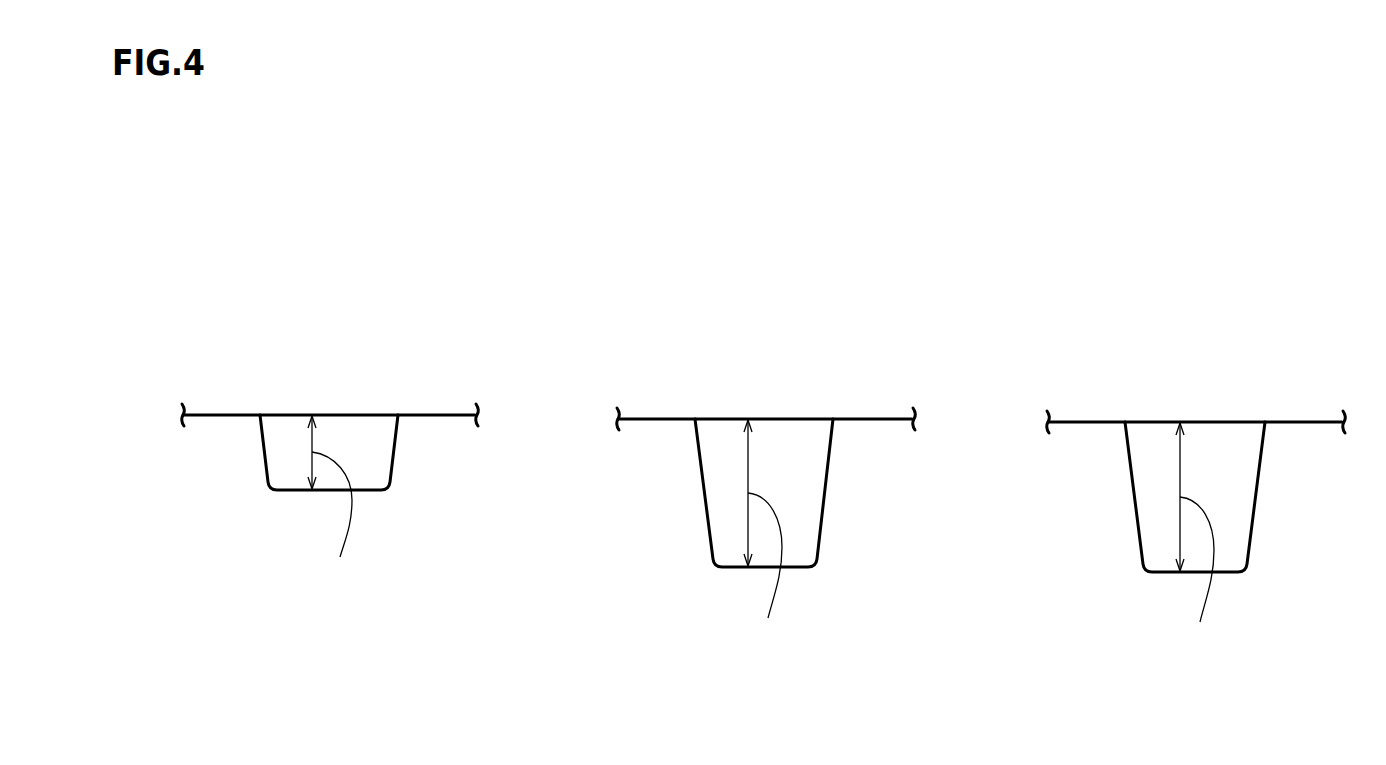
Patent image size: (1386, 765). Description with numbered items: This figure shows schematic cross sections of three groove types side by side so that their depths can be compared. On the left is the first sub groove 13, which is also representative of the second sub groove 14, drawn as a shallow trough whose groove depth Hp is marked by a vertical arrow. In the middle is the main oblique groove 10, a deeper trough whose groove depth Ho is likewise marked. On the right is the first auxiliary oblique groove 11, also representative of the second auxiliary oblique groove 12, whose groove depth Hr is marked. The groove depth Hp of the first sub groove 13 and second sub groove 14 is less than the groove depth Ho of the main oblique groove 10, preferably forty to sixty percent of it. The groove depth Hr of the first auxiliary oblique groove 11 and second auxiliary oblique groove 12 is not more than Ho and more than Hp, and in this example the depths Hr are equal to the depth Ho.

The main oblique groove 10 is at (792, 407).
The first auxiliary oblique groove 11 is at (1196, 474).
The second auxiliary oblique groove 12 is at (1223, 413).
The first sub groove 13 is at (330, 436).
The second sub groove 14 is at (345, 406).